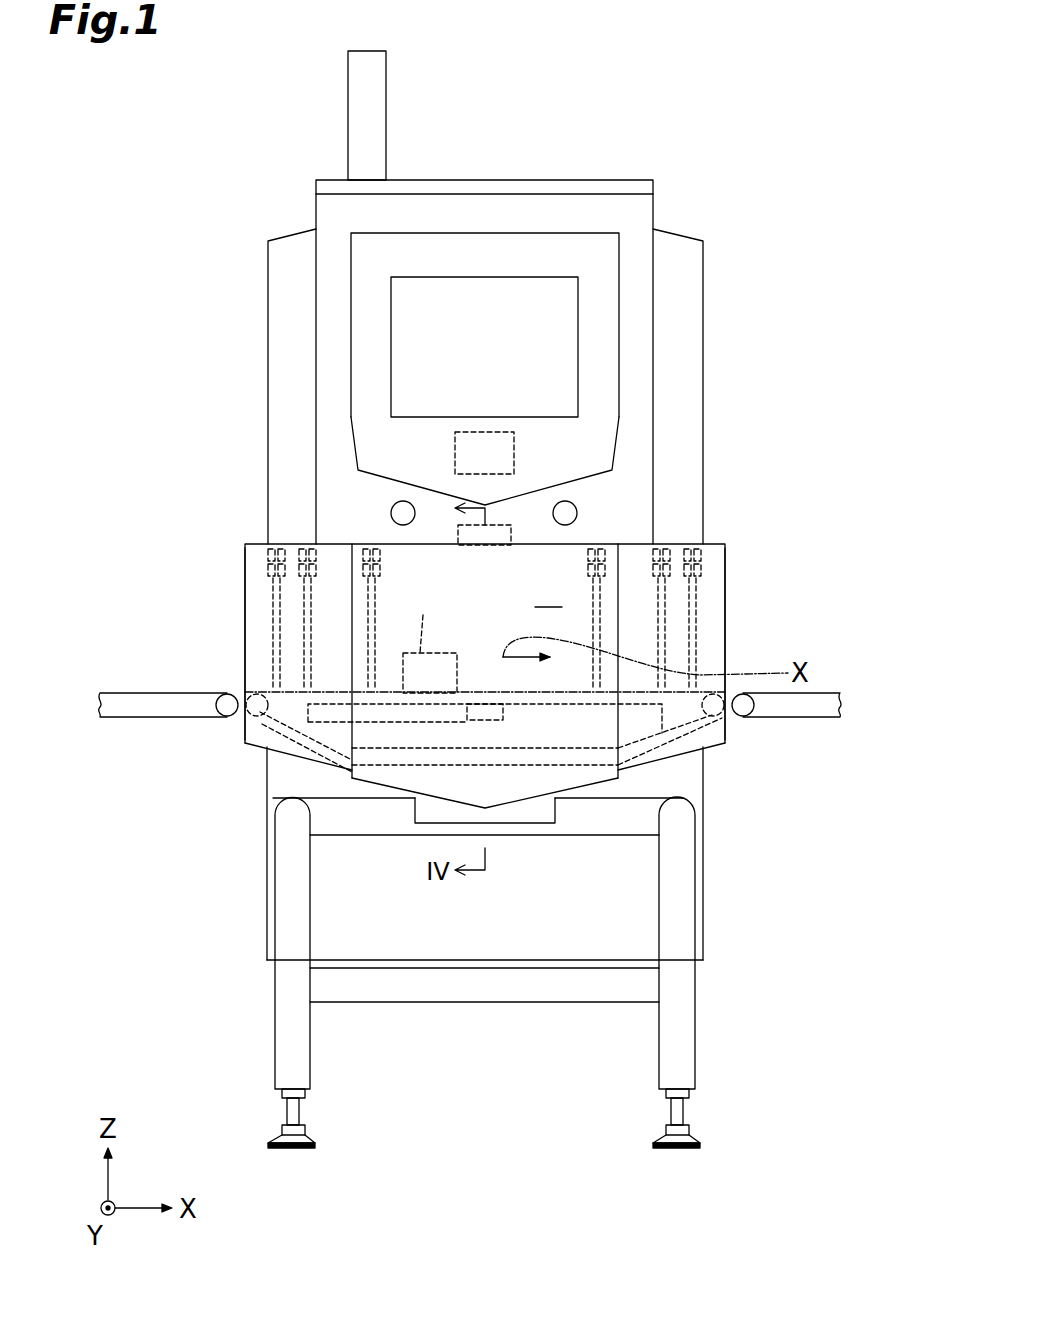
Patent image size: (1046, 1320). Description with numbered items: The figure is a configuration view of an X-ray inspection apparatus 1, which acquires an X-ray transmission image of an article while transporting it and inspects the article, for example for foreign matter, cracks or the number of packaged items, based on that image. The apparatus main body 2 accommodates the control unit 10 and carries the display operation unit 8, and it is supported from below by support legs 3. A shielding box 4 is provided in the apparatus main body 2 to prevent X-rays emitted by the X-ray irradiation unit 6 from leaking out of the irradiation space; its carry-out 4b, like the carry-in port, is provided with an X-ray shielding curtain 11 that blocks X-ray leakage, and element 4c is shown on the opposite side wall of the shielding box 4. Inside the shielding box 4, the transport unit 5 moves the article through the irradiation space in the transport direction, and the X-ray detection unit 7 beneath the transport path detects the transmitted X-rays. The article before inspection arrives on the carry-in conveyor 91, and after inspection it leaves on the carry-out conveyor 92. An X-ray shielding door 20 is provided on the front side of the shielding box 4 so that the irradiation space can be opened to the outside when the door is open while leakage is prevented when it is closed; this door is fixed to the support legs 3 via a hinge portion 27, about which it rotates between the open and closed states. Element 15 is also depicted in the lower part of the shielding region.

The X-ray inspection apparatus 1 is at (770, 137).
The apparatus main body 2 is at (607, 180).
The support legs 3 is at (288, 1022).
The shielding box 4 is at (627, 544).
The carry-out 4b is at (725, 628).
The left side wall of shield box 4c is at (245, 657).
The transport unit 5 is at (698, 730).
The X-ray irradiation unit 6 is at (497, 525).
The X-ray detection unit 7 is at (467, 716).
The display operation unit 8 is at (391, 352).
The control unit 10 is at (455, 453).
The X-ray shielding curtain 11 is at (372, 612).
The conveyor belt 15 is at (323, 738).
The X-ray shielding door 20 is at (243, 636).
The hinge portion 27 is at (443, 813).
The carry-in conveyor 91 is at (125, 702).
The carry-out conveyor 92 is at (823, 700).